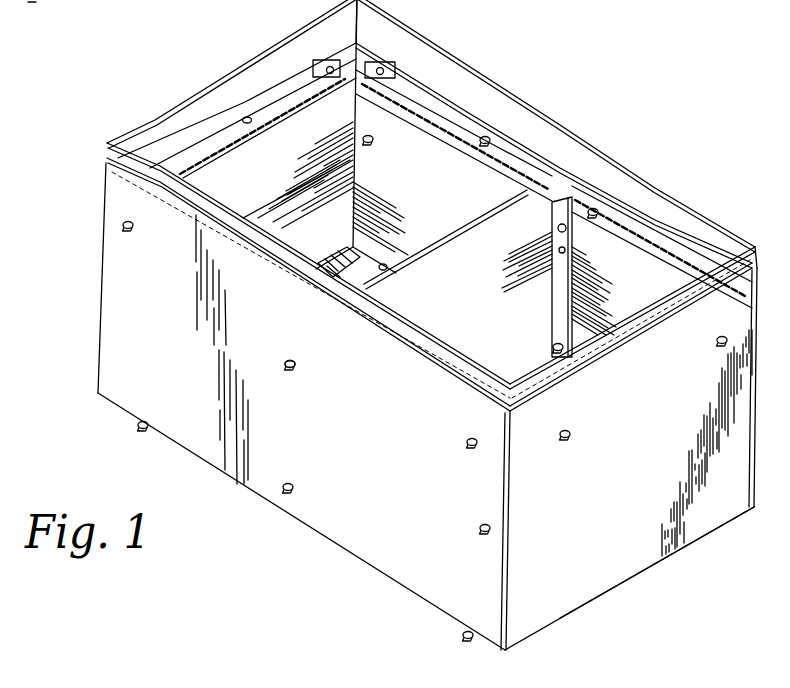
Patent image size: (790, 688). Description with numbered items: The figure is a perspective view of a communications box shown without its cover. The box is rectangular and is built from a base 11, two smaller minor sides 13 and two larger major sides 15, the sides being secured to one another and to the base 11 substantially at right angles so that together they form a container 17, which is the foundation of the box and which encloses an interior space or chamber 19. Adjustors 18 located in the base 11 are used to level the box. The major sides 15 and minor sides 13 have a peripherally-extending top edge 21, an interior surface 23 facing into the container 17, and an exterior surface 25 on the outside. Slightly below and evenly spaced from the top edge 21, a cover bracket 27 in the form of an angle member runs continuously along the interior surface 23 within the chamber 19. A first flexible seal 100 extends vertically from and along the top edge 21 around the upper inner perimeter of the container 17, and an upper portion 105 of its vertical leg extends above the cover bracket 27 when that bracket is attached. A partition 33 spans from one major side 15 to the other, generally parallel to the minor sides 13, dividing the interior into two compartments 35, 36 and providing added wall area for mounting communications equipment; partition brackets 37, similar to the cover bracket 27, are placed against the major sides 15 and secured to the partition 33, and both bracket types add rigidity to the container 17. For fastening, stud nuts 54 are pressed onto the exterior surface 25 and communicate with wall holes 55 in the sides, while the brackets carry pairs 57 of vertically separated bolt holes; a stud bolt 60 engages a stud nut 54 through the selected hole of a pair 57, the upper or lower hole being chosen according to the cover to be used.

The first flexible seal 100 is at (143, 118).
The base 11 is at (624, 585).
The minor sides 13 is at (666, 462).
The major sides 15 is at (391, 467).
The container 17 is at (88, 246).
The adjustors 18 is at (462, 638).
The interior space or chamber 19 is at (470, 109).
The top edge 21 is at (597, 367).
The interior surface 23 is at (299, 238).
The exterior surface 25 is at (160, 318).
The cover bracket 27 is at (530, 163).
The partition 33 is at (473, 340).
The compartment 35 is at (288, 148).
The compartment 36 is at (543, 307).
The partition brackets 37 is at (560, 270).
The stud nuts 54 is at (300, 362).
The wall holes 55 is at (374, 139).
The pairs of bolt holes 57 is at (588, 334).
The stud bolt 60 is at (284, 360).
The upper portion 105 is at (412, 337).